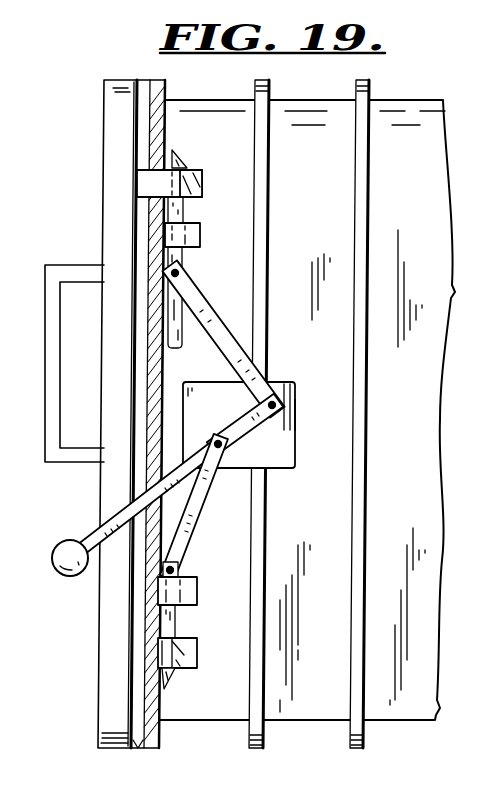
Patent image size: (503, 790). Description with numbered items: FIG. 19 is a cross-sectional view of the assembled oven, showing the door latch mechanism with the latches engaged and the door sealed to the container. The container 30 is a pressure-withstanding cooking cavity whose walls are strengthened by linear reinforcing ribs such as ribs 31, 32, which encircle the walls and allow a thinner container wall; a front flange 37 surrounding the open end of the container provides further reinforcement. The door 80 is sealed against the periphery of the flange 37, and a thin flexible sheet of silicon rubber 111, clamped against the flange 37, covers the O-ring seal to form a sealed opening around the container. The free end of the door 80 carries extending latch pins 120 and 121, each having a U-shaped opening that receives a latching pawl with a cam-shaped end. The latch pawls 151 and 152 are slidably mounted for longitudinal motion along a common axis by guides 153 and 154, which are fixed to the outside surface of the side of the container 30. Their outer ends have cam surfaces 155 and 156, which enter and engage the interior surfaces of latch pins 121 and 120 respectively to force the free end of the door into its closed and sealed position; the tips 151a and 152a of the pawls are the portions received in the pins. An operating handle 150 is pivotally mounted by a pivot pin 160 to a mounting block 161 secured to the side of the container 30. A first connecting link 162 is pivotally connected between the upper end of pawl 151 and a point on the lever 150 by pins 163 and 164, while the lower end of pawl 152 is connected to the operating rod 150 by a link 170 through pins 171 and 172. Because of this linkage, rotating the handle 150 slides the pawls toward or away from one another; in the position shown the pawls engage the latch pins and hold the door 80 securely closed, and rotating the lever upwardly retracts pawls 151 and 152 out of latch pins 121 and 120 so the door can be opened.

The container 30 is at (324, 219).
The reinforcing rib 31 is at (270, 86).
The reinforcing rib 32 is at (371, 86).
The front flange 37 is at (163, 98).
The door 80 is at (110, 160).
The flexible sheet of silicon rubber 111 is at (145, 108).
The latch pin 120 is at (203, 184).
The latch pin 121 is at (198, 652).
The operating handle 150 is at (90, 540).
The latch pawl 151 is at (177, 623).
The lower bolt tip 151a is at (176, 656).
The latch pawl 152 is at (186, 216).
The upper bolt tip 152a is at (187, 170).
The guide 153 is at (198, 589).
The guide 154 is at (201, 238).
The cam surface 155 is at (170, 686).
The cam surface 156 is at (180, 160).
The pivot pin 160 is at (246, 431).
The mounting block 161 is at (296, 438).
The first connecting link 162 is at (196, 514).
The pin 163 is at (180, 565).
The pin 164 is at (212, 438).
The link 170 is at (238, 320).
The pin 171 is at (181, 275).
The pin 172 is at (278, 405).